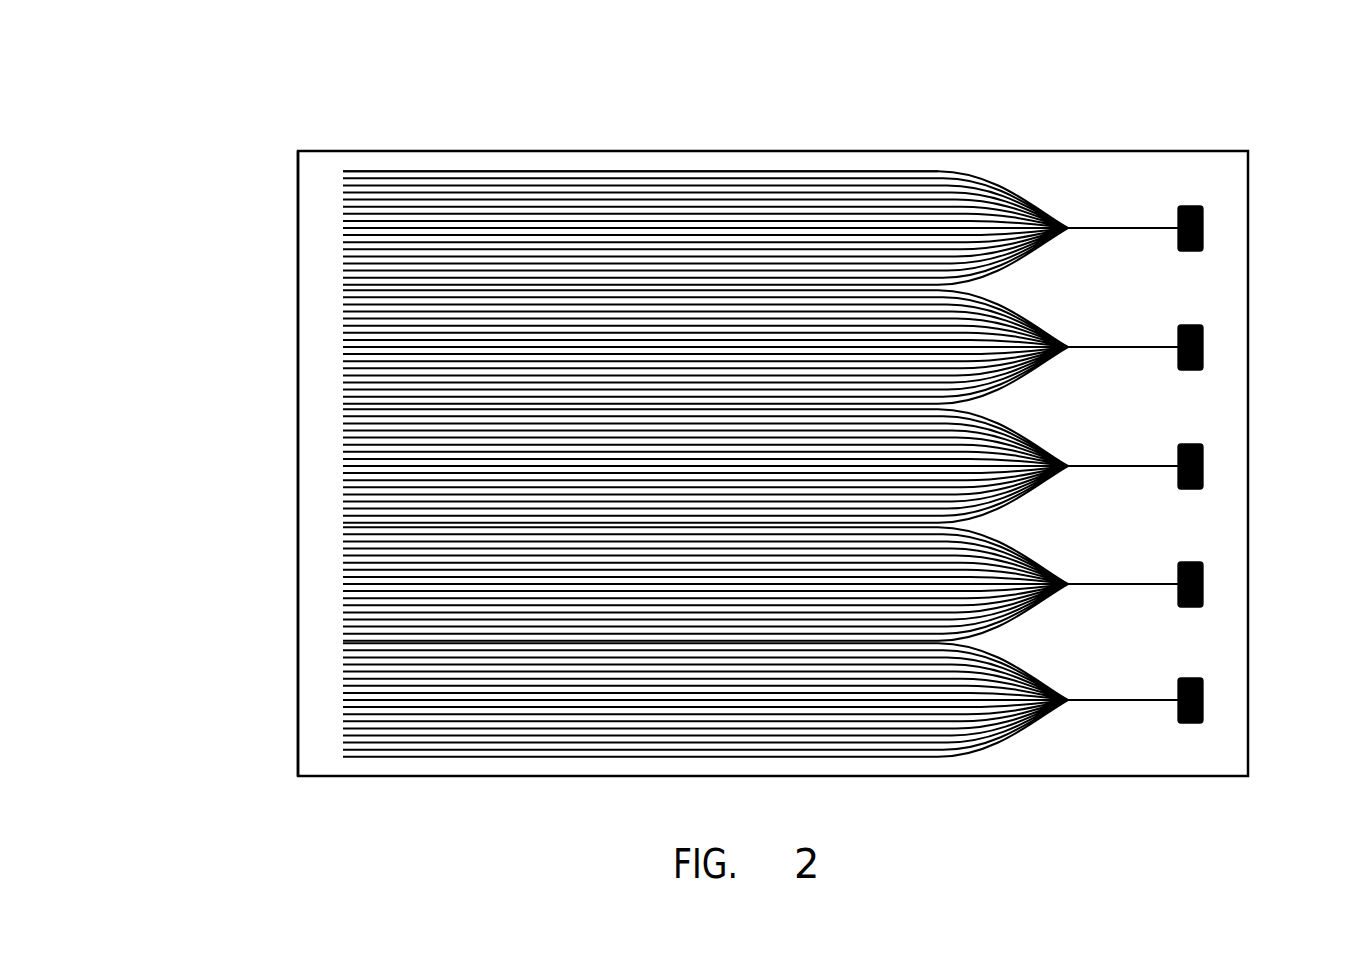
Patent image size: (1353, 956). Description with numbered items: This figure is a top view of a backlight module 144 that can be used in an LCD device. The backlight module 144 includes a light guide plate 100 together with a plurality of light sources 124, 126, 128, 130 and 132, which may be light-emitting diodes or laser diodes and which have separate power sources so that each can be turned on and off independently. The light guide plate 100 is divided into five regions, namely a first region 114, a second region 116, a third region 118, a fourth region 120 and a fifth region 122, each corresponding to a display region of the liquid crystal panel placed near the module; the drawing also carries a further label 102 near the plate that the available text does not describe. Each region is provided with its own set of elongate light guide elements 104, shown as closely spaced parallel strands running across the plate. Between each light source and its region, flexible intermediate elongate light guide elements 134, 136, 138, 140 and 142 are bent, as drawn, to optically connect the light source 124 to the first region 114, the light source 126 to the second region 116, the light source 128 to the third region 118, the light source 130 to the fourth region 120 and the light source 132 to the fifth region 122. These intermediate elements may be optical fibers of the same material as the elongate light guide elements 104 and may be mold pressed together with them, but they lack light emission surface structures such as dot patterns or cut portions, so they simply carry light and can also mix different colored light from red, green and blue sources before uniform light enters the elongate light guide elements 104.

The light guide plate 100 is at (279, 431).
The first edge of substrate 102 is at (308, 165).
The elongate light guide elements 104 is at (776, 163).
The first region 114 is at (1076, 167).
The second region 116 is at (1124, 371).
The third region 118 is at (1124, 490).
The fourth region 120 is at (1124, 608).
The fifth region 122 is at (1124, 724).
The light source 124 is at (1249, 228).
The light source 126 is at (1249, 347).
The light source 128 is at (1249, 466).
The light source 130 is at (1249, 584).
The light source 132 is at (1249, 700).
The intermediate elongate light guide element 134 is at (1003, 178).
The intermediate elongate light guide elements 136 is at (831, 363).
The intermediate elongate light guide elements 138 is at (831, 482).
The intermediate elongate light guide elements 140 is at (831, 600).
The intermediate elongate light guide elements 142 is at (831, 716).
The backlight module 144 is at (228, 165).